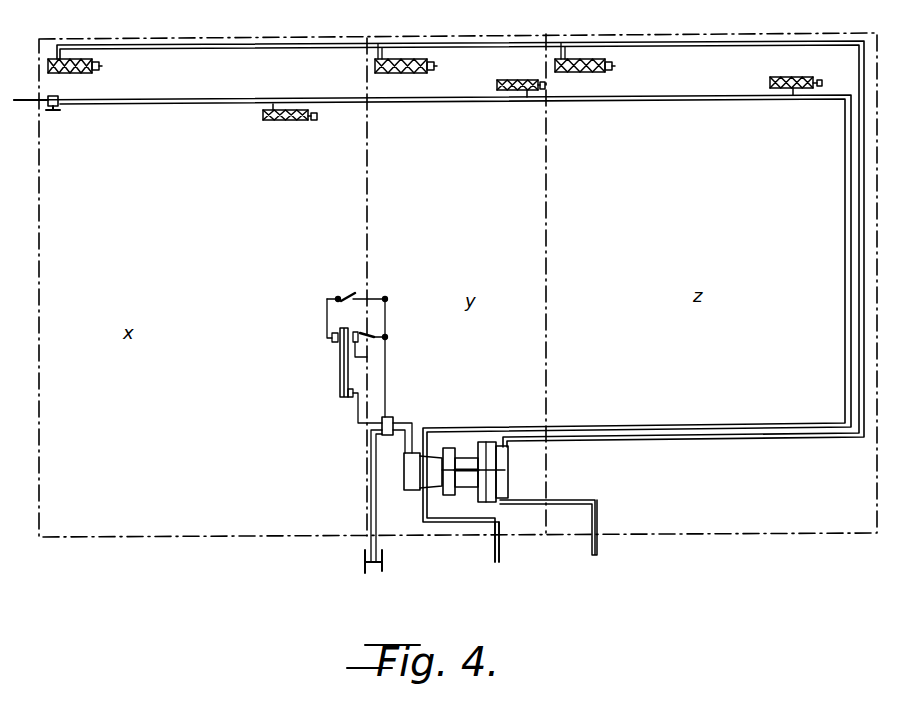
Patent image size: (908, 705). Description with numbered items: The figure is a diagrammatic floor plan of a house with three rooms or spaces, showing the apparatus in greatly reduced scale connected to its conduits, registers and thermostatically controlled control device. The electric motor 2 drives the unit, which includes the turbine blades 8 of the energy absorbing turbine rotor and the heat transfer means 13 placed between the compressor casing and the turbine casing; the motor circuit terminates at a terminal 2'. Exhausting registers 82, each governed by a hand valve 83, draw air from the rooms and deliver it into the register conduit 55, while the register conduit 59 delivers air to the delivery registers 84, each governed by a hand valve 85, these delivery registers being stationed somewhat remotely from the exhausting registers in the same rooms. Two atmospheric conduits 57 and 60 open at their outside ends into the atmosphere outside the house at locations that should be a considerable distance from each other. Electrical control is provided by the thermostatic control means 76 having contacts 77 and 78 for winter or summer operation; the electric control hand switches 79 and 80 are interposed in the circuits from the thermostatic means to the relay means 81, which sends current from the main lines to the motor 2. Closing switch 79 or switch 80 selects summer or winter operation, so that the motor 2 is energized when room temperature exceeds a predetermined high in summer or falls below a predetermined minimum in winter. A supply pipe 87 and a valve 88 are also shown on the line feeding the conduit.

The electric motor 2 is at (414, 471).
The terminal 2' is at (382, 574).
The turbine blades 8 is at (481, 472).
The heat transfer means 13 is at (455, 449).
The register conduit 55 is at (613, 424).
The atmospheric conduit 57 is at (495, 552).
The register conduit 59 is at (641, 438).
The atmospheric conduit 60 is at (599, 526).
The thermostatic control means 76 is at (338, 355).
The contact 77 is at (330, 342).
The contact 78 is at (371, 360).
The electric control hand switch 79 is at (343, 292).
The electric control hand switch 80 is at (364, 331).
The relay means 81 is at (391, 413).
The exhausting register 82 is at (285, 121).
The hand valve 83 is at (318, 120).
The air delivery register 84 is at (62, 74).
The hand valve 85 is at (101, 68).
The supply pipe 87 is at (27, 103).
The valve 88 is at (53, 111).